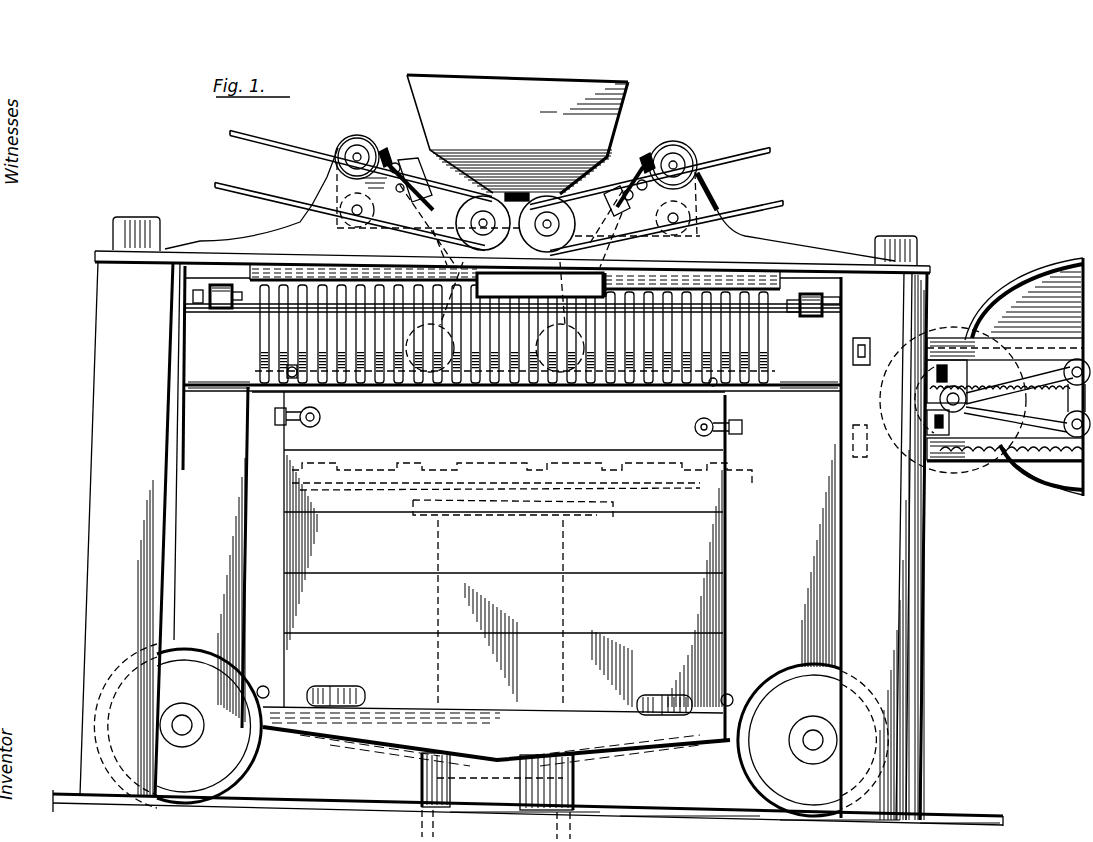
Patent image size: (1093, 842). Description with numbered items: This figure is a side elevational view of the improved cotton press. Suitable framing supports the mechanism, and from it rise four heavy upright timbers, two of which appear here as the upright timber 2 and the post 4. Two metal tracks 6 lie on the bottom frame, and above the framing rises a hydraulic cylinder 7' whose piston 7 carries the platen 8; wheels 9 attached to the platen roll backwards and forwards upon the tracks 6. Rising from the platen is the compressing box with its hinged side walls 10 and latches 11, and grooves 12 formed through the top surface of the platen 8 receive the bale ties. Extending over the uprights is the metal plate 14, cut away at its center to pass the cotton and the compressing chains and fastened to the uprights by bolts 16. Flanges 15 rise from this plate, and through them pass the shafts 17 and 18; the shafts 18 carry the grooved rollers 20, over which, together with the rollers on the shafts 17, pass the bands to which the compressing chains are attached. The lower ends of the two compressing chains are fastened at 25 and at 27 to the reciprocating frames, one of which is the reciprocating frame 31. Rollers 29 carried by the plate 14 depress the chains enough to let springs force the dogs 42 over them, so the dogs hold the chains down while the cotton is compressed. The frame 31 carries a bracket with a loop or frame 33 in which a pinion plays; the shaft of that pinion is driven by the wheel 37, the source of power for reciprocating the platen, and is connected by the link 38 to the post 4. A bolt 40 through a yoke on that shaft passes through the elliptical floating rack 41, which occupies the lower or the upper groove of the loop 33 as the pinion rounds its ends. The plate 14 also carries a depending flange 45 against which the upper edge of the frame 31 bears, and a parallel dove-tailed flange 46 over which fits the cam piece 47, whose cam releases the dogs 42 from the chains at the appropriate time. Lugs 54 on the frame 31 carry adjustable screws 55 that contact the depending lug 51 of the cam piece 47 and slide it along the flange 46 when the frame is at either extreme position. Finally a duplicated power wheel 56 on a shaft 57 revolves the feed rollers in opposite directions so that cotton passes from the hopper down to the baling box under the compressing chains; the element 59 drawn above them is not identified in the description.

The upright timber 2 is at (107, 540).
The upright timber 4 is at (913, 633).
The metal tracks 6 is at (337, 803).
The piston 7 is at (495, 683).
The hydraulic cylinder 7' is at (516, 796).
The platen 8 is at (400, 503).
The wheels 9 is at (491, 730).
The hinged side walls 10 is at (735, 600).
The latches 11 is at (278, 424).
The grooves 12 is at (462, 473).
The metal plate 14 is at (793, 270).
The flanges 15 is at (707, 210).
The bolts 16 is at (897, 246).
The shafts 17 is at (352, 222).
The shafts 18 is at (340, 161).
The grooved rollers 20 is at (350, 139).
The fastening point of compressing chain 25 is at (705, 392).
The fastening point of compressing chain 27 is at (280, 388).
The rollers 29 is at (432, 396).
The reciprocating frame 31 is at (232, 557).
The loop or frame 33 is at (953, 338).
The wheel 37 is at (1053, 263).
The link 38 is at (1013, 380).
The bolt 40 is at (1062, 423).
The elliptical floating rack 41 is at (973, 460).
The dogs 42 is at (260, 343).
The depending flange 45 is at (355, 272).
The dove-tailed flange 46 is at (450, 275).
The cam piece 47 is at (570, 285).
The depending lug 51 is at (540, 285).
The lugs 54 is at (205, 290).
The adjustable screws 55 is at (198, 308).
The power wheel 56 is at (464, 200).
The shaft 57 is at (524, 193).
The hopper 59 is at (517, 134).